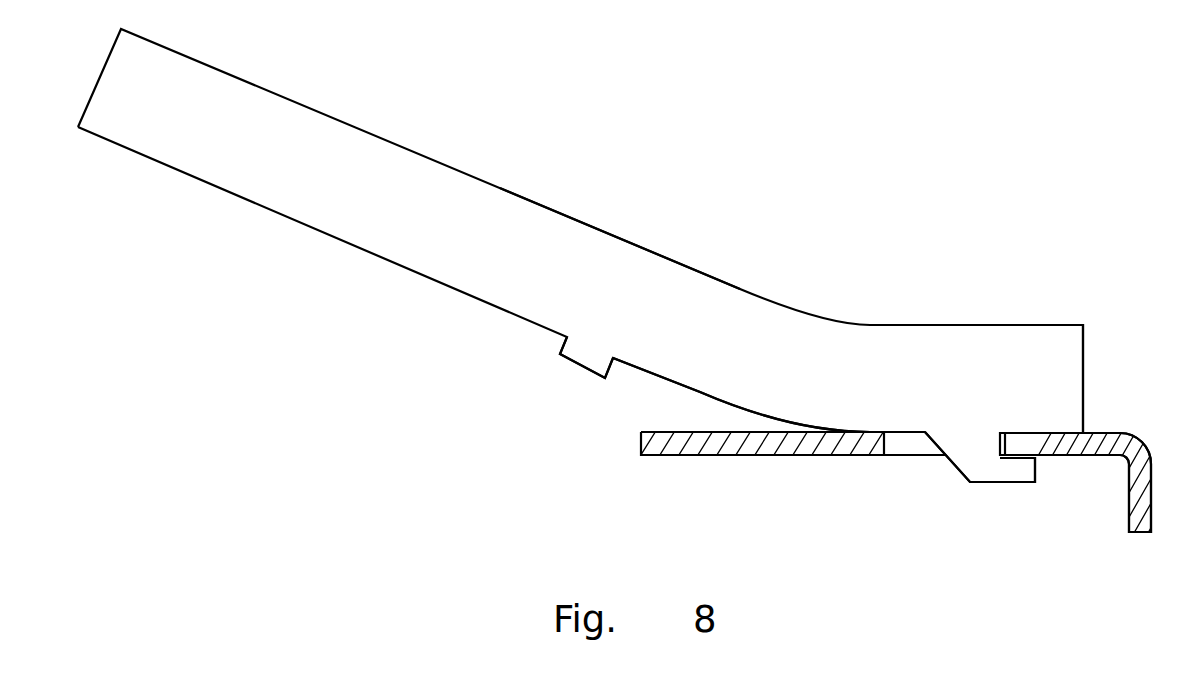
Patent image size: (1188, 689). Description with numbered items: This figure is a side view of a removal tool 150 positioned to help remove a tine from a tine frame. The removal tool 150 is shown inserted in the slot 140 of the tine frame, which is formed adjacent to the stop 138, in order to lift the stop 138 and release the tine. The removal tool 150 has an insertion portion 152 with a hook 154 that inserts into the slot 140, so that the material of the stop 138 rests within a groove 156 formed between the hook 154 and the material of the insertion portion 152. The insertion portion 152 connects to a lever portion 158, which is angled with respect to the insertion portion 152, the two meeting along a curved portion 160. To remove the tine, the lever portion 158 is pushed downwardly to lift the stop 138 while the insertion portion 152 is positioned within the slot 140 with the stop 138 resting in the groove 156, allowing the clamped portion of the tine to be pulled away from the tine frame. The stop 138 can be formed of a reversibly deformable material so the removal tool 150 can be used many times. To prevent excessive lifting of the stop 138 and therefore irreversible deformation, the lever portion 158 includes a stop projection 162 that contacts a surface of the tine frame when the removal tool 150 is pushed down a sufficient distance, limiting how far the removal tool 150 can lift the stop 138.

The stop 138 is at (1123, 494).
The slot 140 is at (909, 450).
The removal tool 150 is at (568, 206).
The insertion portion 152 is at (1033, 337).
The hook 154 is at (1005, 472).
The groove 156 is at (1017, 428).
The lever portion 158 is at (625, 258).
The curved portion 160 is at (751, 412).
The stop projection 162 is at (580, 368).